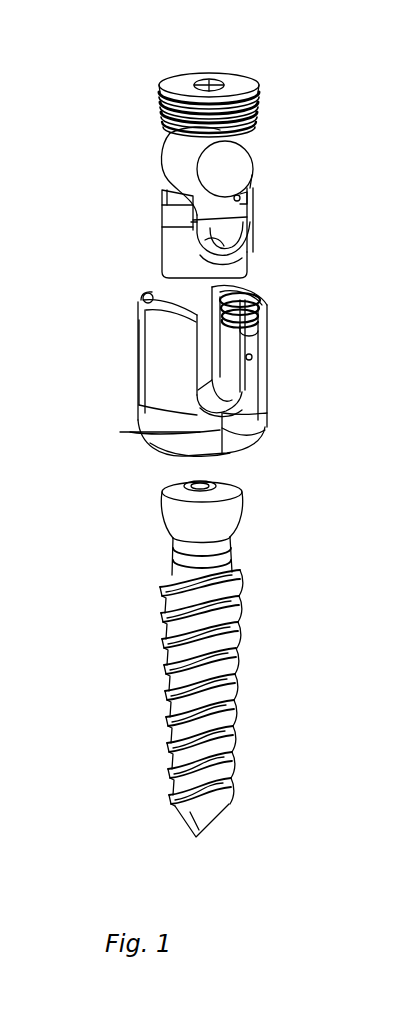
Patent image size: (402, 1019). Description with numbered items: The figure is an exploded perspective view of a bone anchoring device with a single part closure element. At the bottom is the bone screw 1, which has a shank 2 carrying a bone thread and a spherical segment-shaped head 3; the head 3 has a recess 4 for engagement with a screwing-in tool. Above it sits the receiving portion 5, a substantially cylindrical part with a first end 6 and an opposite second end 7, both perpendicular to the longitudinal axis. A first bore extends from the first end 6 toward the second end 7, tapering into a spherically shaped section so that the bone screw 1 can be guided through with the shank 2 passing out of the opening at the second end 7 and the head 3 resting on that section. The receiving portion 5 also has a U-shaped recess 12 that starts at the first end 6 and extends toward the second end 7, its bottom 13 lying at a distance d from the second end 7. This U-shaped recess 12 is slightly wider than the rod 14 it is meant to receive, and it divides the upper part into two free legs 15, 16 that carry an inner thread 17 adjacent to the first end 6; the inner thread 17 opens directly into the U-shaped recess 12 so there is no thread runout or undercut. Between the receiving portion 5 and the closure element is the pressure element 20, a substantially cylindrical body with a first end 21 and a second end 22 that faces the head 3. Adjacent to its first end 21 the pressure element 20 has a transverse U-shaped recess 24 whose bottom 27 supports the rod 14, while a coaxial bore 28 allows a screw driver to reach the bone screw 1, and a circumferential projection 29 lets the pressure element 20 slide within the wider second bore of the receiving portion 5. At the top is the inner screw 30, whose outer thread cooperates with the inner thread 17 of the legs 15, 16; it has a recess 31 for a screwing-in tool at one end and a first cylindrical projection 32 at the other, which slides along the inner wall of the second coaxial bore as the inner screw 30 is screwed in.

The bone screw 1 is at (237, 545).
The shank 2 is at (233, 650).
The head 3 is at (243, 512).
The recess 4 is at (213, 478).
The receiving portion 5 is at (270, 365).
The first end 6 is at (150, 296).
The second end 7 is at (180, 451).
The U-shaped recess 12 is at (253, 355).
The bottom 13 is at (235, 410).
The rod 14 is at (160, 147).
The free leg 15 is at (138, 338).
The free leg 16 is at (272, 295).
The inner thread 17 is at (242, 292).
The pressure element 20 is at (254, 220).
The first end 21 is at (170, 192).
The second end 22 is at (155, 298).
The U-shaped recess 24 is at (193, 228).
The bottom 27 is at (237, 247).
The coaxial bore 28 is at (251, 217).
The circumferential projection 29 is at (254, 195).
The inner screw 30 is at (246, 78).
The recess 31 is at (209, 80).
The first cylindrical projection 32 is at (260, 118).
The distance d is at (120, 432).